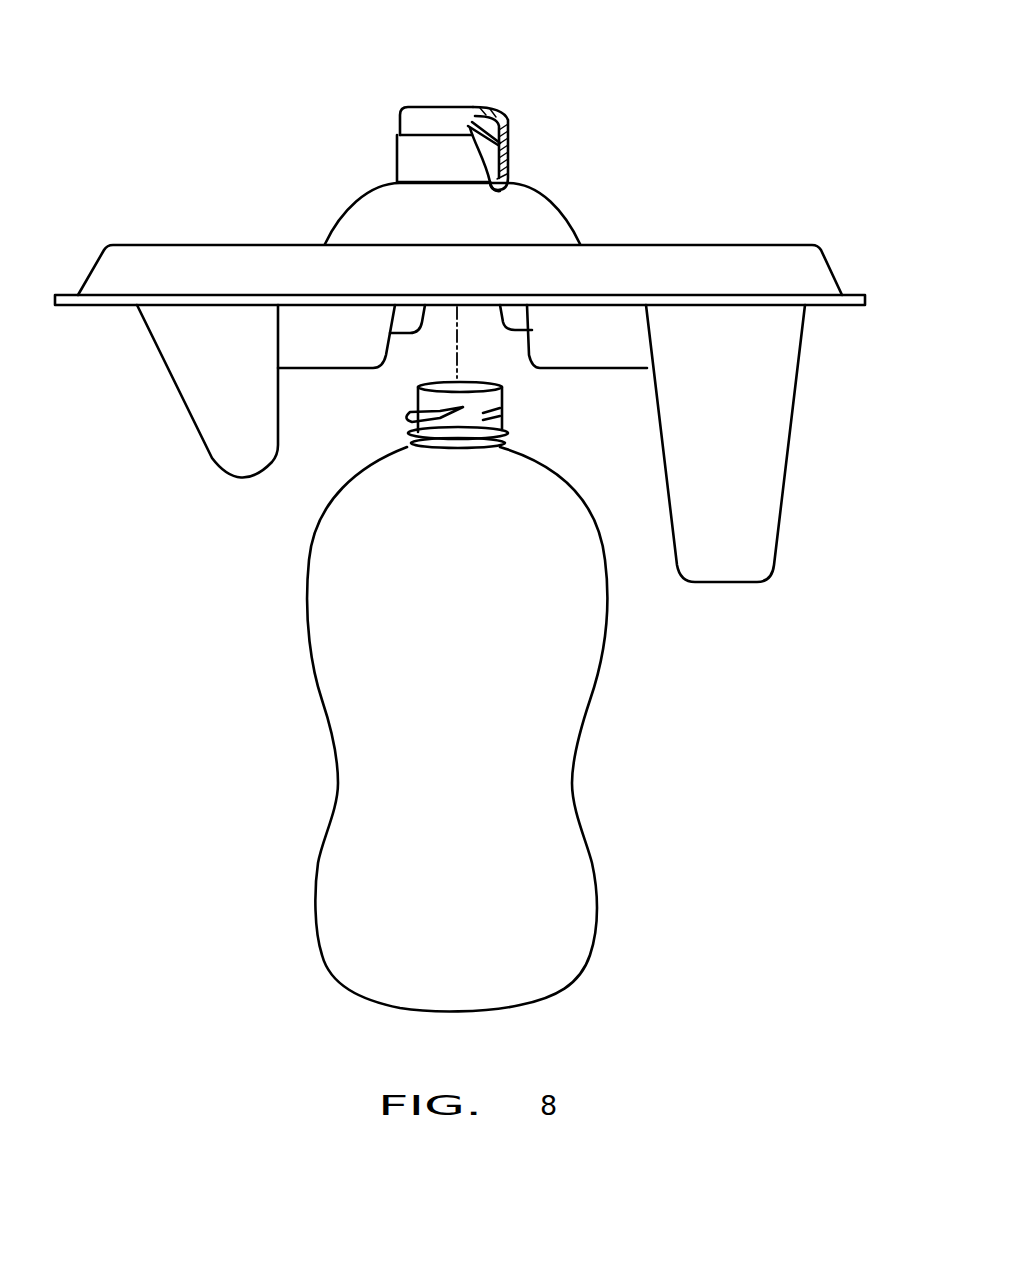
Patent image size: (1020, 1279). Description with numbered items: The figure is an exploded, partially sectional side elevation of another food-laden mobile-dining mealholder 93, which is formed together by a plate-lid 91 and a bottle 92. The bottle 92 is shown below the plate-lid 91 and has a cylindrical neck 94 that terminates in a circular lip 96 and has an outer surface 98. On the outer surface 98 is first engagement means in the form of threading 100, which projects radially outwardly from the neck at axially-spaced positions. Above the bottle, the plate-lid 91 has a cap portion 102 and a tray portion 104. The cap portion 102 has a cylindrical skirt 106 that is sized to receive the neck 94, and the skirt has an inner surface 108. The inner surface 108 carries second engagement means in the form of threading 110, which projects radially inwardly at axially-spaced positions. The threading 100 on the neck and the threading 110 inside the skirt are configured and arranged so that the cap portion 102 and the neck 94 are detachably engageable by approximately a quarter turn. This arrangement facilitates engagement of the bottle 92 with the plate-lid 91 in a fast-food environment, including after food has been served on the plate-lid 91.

The plate-lid 91 is at (768, 258).
The bottle 92 is at (555, 693).
The mobile-dining mealholder 93 is at (423, 695).
The cylindrical neck 94 is at (420, 390).
The circular lip 96 is at (490, 381).
The outer surface 98 is at (503, 429).
The threading 100 is at (410, 416).
The cap portion 102 is at (508, 122).
The tray portion 104 is at (670, 250).
The cylindrical skirt 106 is at (410, 125).
The inner surface 108 is at (512, 186).
The threading 110 is at (489, 112).